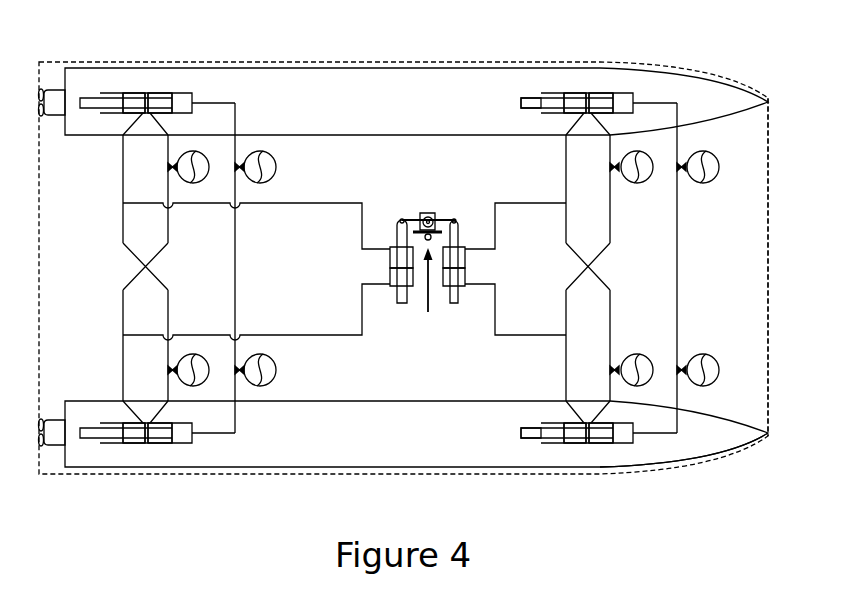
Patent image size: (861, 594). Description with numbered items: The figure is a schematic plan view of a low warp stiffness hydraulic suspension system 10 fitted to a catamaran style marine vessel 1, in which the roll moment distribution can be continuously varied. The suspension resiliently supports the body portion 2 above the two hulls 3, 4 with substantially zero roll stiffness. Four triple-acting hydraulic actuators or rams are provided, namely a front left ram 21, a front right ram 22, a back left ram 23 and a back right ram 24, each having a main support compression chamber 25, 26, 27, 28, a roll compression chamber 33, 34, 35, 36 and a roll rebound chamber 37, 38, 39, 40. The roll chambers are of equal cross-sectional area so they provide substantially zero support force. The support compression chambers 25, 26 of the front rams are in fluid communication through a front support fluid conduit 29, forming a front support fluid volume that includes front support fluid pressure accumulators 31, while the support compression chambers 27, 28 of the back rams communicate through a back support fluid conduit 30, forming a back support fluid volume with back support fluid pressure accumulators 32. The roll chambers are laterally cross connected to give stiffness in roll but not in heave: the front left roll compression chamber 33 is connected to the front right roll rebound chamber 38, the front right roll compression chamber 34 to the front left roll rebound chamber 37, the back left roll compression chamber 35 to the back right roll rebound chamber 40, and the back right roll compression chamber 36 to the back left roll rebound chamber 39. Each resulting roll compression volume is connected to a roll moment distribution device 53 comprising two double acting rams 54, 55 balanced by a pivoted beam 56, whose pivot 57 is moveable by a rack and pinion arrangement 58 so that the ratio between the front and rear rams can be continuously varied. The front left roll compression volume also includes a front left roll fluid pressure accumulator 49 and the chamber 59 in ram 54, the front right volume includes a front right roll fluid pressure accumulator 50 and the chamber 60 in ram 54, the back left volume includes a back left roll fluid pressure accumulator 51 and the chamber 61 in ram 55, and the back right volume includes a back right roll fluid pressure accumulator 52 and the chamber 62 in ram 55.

The marine vessel 1 is at (765, 44).
The body portion 2 is at (770, 190).
The hull 3 is at (340, 85).
The hull 4 is at (340, 450).
The hydraulic suspension system 10 is at (715, 447).
The front left ram 21 is at (525, 73).
The front right ram 22 is at (526, 460).
The back left ram 23 is at (82, 75).
The back right ram 24 is at (83, 460).
The main support compression chamber 25 is at (625, 97).
The main support compression chamber 26 is at (625, 440).
The main support compression chamber 27 is at (185, 97).
The main support compression chamber 28 is at (185, 440).
The front support fluid conduit 29 is at (677, 250).
The back support fluid conduit 30 is at (238, 250).
The front support fluid pressure accumulator 31 is at (710, 180).
The back support fluid pressure accumulator 32 is at (274, 178).
The front left roll compression chamber 33 is at (576, 93).
The front right roll compression chamber 34 is at (577, 445).
The back left roll compression chamber 35 is at (137, 93).
The back right roll compression chamber 36 is at (137, 445).
The front left roll rebound chamber 37 is at (597, 93).
The front right roll rebound chamber 38 is at (598, 445).
The back left roll rebound chamber 39 is at (158, 93).
The back right roll rebound chamber 40 is at (158, 445).
The front left roll fluid pressure accumulator 49 is at (640, 353).
The front right roll fluid pressure accumulator 50 is at (638, 184).
The back left roll fluid pressure accumulator 51 is at (210, 378).
The back right roll fluid pressure accumulator 52 is at (204, 172).
The roll moment distribution device 53 is at (425, 268).
The double acting ram 54 is at (489, 302).
The double acting ram 55 is at (364, 302).
The pivoted beam 56 is at (452, 216).
The pivot 57 is at (426, 215).
The rack and pinion arrangement 58 is at (427, 293).
The chamber 59 is at (465, 262).
The chamber 60 is at (465, 275).
The chamber 61 is at (390, 262).
The chamber 62 is at (390, 275).